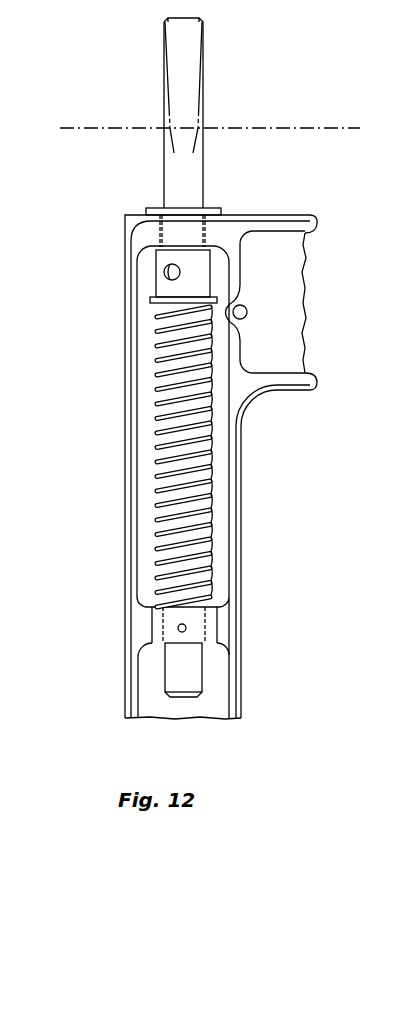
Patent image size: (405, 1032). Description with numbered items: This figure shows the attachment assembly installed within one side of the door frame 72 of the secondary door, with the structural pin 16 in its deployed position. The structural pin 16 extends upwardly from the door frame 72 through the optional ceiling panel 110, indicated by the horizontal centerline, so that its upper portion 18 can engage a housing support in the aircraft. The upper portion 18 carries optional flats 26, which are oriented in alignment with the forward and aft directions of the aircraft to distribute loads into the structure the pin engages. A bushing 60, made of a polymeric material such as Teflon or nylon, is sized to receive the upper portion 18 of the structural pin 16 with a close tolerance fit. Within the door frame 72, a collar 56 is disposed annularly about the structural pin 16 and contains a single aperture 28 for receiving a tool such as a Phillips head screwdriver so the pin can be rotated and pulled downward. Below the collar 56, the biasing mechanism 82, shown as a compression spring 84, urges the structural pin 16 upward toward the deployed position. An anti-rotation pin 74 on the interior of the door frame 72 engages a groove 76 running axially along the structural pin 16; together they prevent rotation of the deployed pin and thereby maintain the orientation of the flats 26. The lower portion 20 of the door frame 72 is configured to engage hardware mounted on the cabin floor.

The structural pin 16 is at (182, 109).
The upper portion 18 is at (203, 158).
The flats 26 is at (175, 63).
The aperture 28 is at (160, 272).
The collar 56 is at (162, 261).
The bushing 60 is at (222, 210).
The door frame 72 is at (125, 405).
The anti-rotation pin 74 is at (187, 626).
The groove 76 is at (187, 572).
The biasing mechanism 82 is at (247, 456).
The compression spring 84 is at (247, 456).
The lower portion 20 is at (203, 668).
The ceiling panel 110 is at (308, 130).